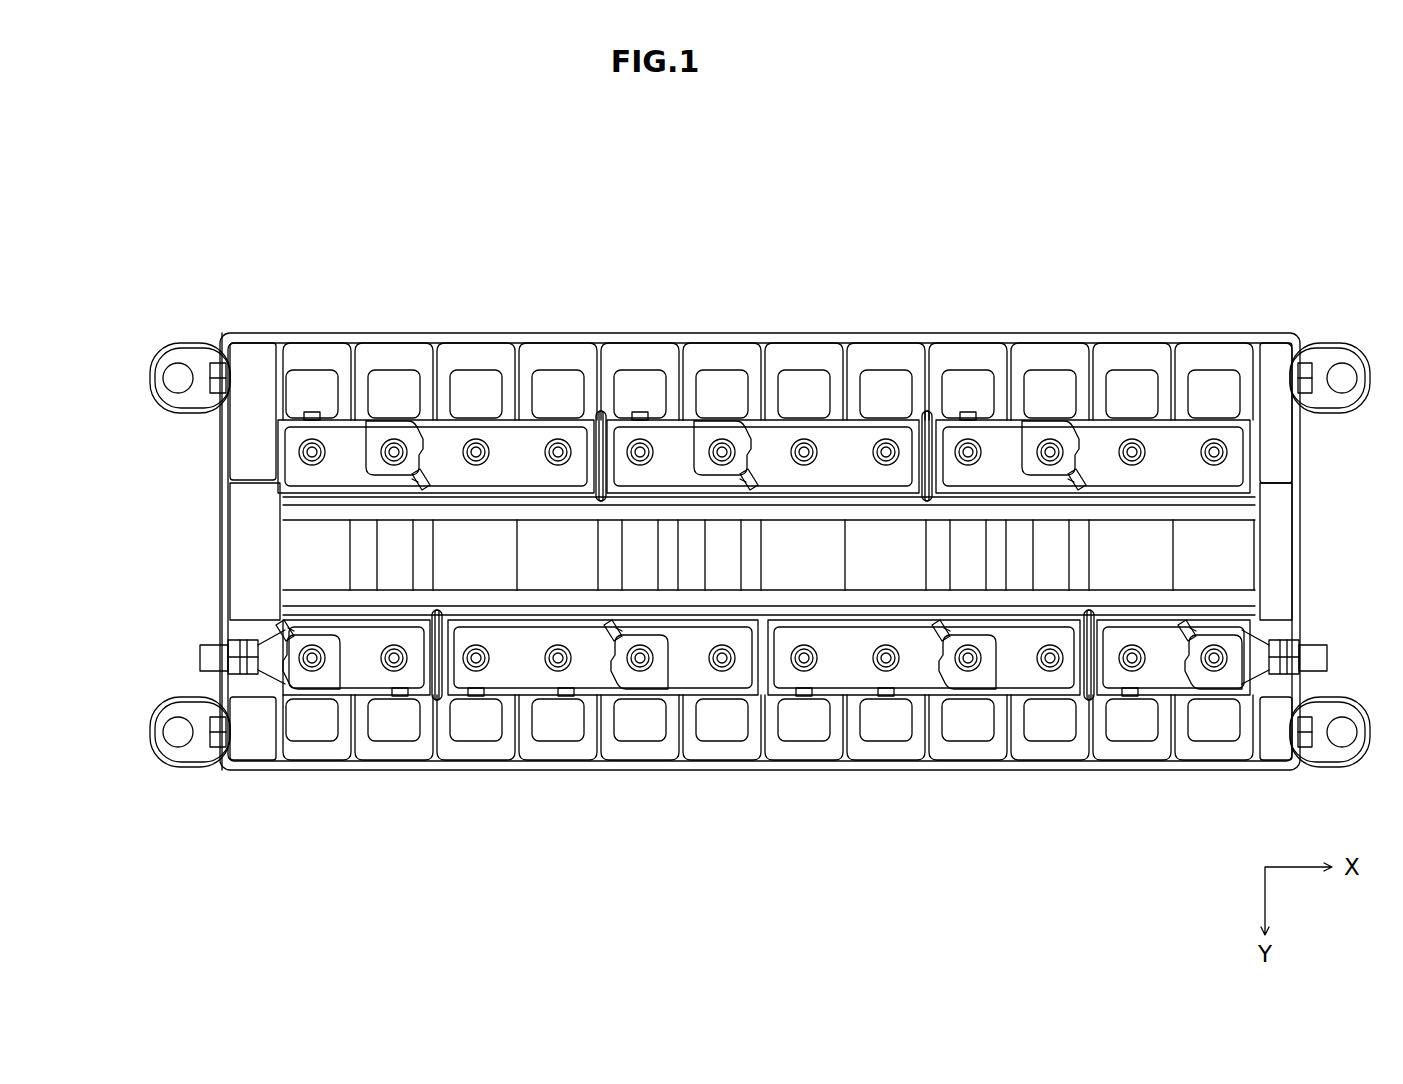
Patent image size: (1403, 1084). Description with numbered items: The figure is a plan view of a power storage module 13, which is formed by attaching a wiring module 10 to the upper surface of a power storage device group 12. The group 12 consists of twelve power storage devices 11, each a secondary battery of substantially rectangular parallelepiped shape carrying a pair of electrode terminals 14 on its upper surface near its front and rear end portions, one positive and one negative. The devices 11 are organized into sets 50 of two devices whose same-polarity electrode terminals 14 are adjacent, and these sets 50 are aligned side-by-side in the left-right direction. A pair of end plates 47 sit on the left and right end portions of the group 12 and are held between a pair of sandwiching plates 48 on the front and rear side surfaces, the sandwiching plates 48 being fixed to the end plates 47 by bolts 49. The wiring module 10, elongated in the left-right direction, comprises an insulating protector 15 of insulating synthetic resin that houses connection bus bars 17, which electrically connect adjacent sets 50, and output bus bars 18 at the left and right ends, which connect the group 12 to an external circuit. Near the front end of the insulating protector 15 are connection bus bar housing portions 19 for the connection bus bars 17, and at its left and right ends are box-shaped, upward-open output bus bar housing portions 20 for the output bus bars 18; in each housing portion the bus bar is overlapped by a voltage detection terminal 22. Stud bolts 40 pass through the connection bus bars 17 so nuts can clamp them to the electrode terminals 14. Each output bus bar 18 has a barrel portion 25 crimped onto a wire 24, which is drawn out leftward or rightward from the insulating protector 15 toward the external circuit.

The wiring module 10 is at (168, 452).
The power storage device 11 is at (1207, 355).
The power storage device group 12 is at (330, 168).
The power storage module 13 is at (1292, 188).
The electrode terminal 14 is at (298, 385).
The insulating protector 15 is at (240, 530).
The connection bus bar 17 is at (300, 465).
The output bus bar 18 is at (363, 675).
The connection bus bar housing portion 19 is at (432, 436).
The output bus bar housing portion 20 is at (400, 692).
The voltage detection terminal 22 is at (308, 680).
The wire 24 is at (208, 660).
The barrel portion 25 is at (245, 648).
The stud bolt 40 is at (566, 694).
The end plate 47 is at (1278, 358).
The sandwiching plate 48 is at (224, 338).
The bolt 49 is at (212, 362).
The set of power storage devices 50 is at (302, 216).